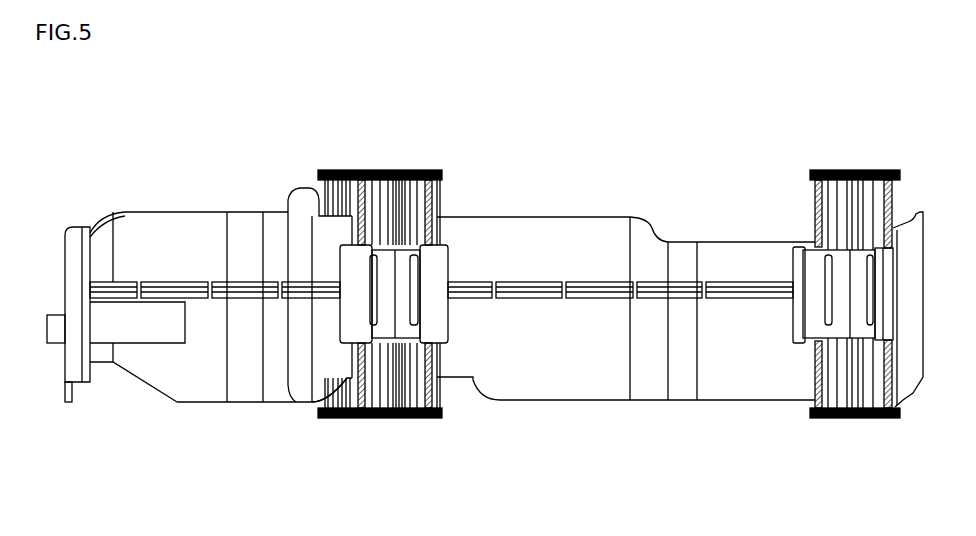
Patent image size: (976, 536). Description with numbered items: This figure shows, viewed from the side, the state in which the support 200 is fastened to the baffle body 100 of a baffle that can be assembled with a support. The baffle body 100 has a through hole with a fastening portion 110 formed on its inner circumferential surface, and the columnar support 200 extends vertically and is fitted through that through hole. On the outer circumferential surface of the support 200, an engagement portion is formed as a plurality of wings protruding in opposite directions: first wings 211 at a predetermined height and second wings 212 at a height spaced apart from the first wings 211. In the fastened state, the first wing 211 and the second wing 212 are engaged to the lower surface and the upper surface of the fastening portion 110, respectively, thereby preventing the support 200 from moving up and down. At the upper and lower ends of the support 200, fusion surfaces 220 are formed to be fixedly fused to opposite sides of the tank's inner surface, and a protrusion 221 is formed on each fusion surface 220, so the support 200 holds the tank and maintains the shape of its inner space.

The baffle body 100 is at (250, 382).
The fastening portion 110 is at (353, 345).
The support 200 is at (395, 283).
The first wing 211 is at (400, 343).
The second wing 212 is at (398, 248).
The fusion surface 220 is at (412, 252).
The protrusion 221 is at (382, 168).